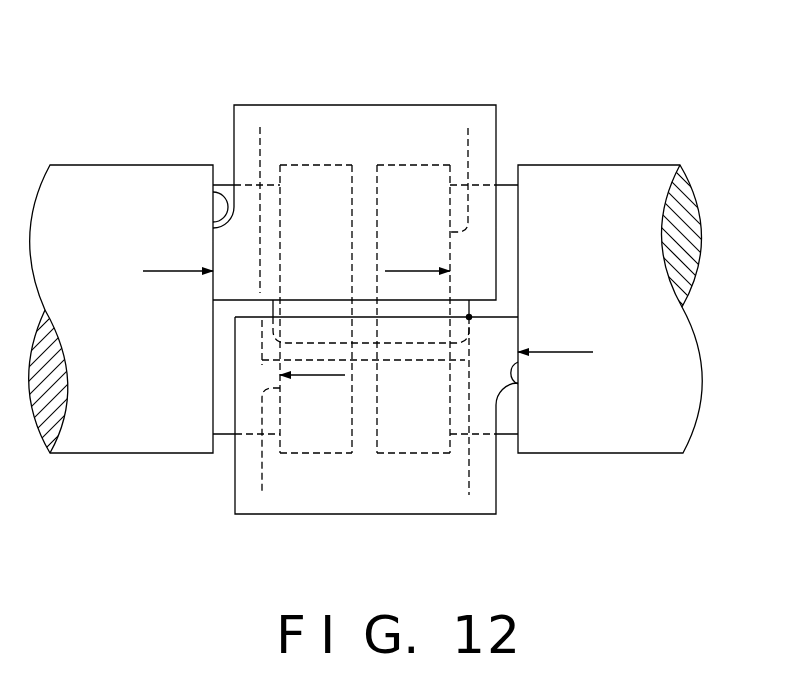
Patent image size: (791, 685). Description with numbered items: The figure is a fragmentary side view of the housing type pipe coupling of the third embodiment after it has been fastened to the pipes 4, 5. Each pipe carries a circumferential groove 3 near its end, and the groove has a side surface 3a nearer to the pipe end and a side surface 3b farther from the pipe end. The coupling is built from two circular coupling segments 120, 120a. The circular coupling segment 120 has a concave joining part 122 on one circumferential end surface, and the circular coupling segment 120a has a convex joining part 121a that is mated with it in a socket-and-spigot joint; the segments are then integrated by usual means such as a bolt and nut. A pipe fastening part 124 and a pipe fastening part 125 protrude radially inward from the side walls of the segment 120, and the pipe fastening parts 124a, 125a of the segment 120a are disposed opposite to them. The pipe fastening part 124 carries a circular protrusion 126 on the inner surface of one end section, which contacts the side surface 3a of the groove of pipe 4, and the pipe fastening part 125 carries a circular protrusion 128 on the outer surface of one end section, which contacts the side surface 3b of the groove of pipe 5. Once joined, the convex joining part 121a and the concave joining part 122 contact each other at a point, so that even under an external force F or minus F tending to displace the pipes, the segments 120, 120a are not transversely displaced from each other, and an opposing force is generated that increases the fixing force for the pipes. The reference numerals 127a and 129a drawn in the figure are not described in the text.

The circumferential groove 3 is at (222, 184).
The side surface of the circumferential groove 3a is at (279, 197).
The side surface of the circumferential groove 3b is at (213, 192).
The pipe 4 is at (122, 190).
The pipe 5 is at (572, 197).
The circular coupling segment 120 is at (363, 498).
The circular coupling segment 120a is at (400, 130).
The convex joining part 121a is at (460, 309).
The concave joining part 122 is at (288, 356).
The pipe fastening part 124 is at (252, 470).
The pipe fastening part 124a is at (258, 150).
The pipe fastening part 125 is at (483, 475).
The pipe fastening part 125a is at (473, 143).
The circular protrusion 126 is at (278, 377).
The pressing portion 127a is at (233, 258).
The circular protrusion 128 is at (487, 383).
The pressing portion 129a is at (458, 286).